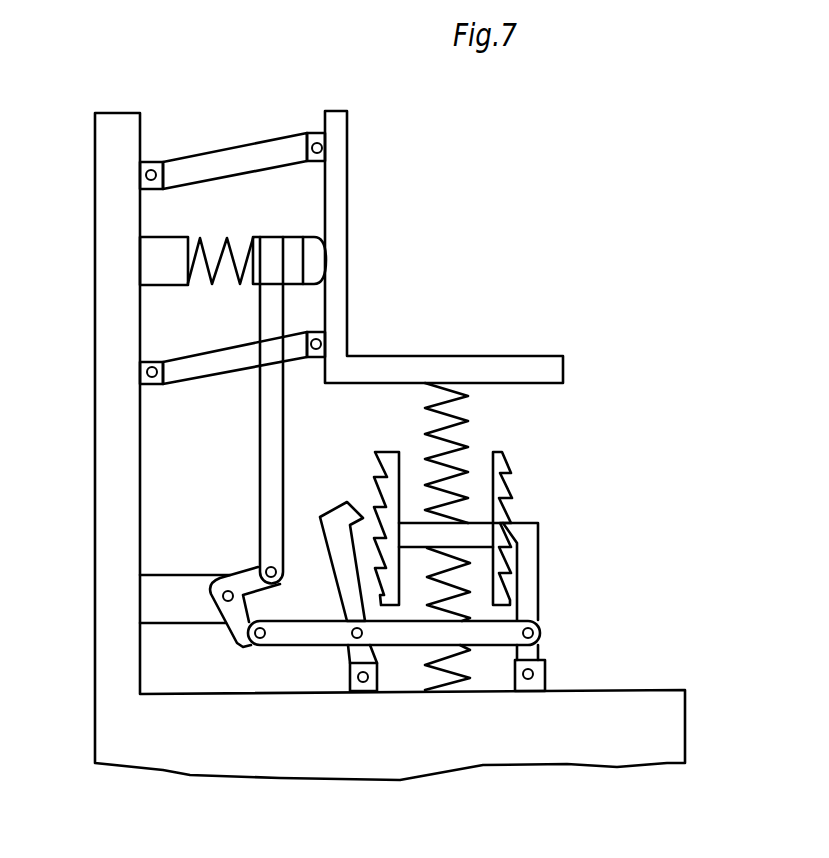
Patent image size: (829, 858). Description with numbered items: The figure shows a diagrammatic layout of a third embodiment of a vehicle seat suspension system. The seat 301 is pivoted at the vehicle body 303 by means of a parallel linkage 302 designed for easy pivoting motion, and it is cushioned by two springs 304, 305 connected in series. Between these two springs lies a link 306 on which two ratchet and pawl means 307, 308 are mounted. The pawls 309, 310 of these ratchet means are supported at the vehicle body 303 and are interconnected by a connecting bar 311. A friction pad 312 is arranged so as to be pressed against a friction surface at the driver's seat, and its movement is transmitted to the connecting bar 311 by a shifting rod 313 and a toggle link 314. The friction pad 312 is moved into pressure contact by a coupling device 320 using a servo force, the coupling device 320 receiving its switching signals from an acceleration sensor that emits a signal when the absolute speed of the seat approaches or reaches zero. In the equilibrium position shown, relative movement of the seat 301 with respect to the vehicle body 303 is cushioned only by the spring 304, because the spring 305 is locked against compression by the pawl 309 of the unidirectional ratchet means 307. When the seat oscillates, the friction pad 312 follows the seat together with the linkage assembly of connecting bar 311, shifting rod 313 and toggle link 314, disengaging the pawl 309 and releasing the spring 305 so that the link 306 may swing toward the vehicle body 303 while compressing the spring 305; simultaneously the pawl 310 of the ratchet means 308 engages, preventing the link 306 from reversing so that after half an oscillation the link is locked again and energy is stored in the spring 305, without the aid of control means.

The seat 301 is at (337, 197).
The parallel linkage 302 is at (208, 163).
The vehicle body 303 is at (113, 450).
The spring 304 is at (470, 418).
The spring 305 is at (458, 687).
The link 306 is at (475, 532).
The ratchet and pawl means 307 is at (546, 512).
The ratchet and pawl means 308 is at (340, 472).
The pawl 309 is at (527, 592).
The pawl 310 is at (342, 570).
The connecting bar 311 is at (410, 627).
The friction pad 312 is at (293, 263).
The shifting rod 313 is at (268, 482).
The toggle link 314 is at (237, 620).
The coupling device 320 is at (150, 257).